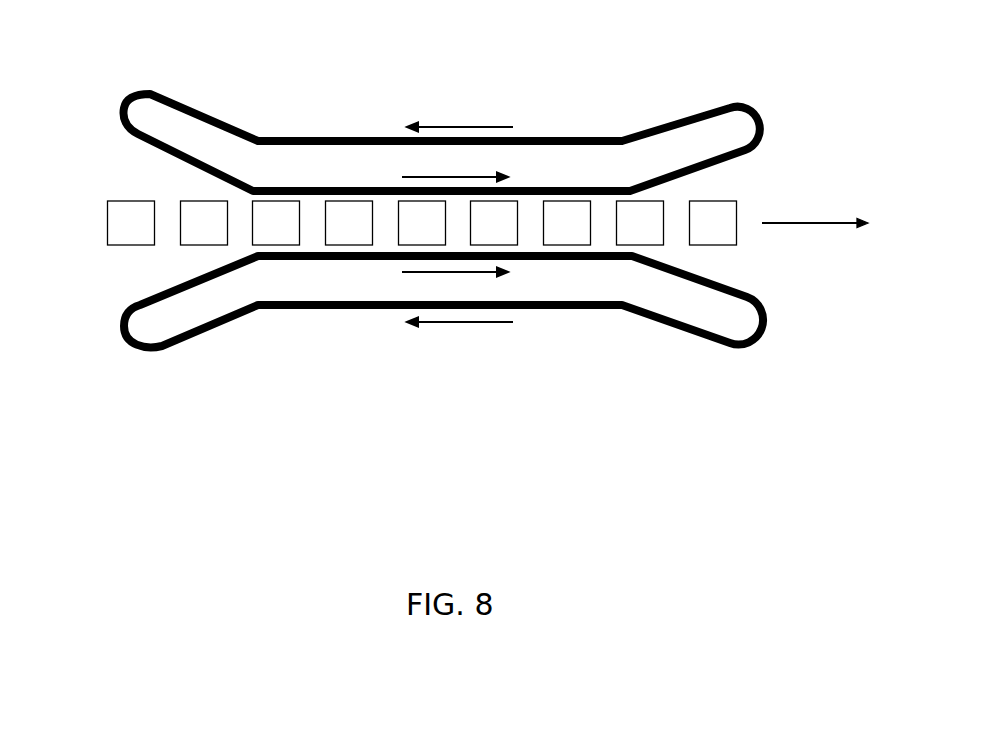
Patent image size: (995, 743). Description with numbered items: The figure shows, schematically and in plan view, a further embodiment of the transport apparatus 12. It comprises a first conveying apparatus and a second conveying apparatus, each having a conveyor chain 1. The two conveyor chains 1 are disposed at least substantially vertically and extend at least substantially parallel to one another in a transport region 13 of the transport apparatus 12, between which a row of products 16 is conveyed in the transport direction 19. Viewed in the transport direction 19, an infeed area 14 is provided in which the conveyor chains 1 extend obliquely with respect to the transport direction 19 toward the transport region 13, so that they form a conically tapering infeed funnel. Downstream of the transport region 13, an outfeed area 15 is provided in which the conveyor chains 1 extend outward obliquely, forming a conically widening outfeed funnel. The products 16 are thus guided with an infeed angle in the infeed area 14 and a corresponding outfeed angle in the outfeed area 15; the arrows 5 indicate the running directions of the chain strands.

The conveyor chain 1 is at (753, 117).
The belt travel direction 5 is at (457, 226).
The transport apparatus 12 is at (56, 136).
The transport region 13 is at (615, 87).
The infeed area 14 is at (134, 85).
The outfeed area 15 is at (625, 90).
The products 16 is at (422, 223).
The transport direction 19 is at (815, 212).